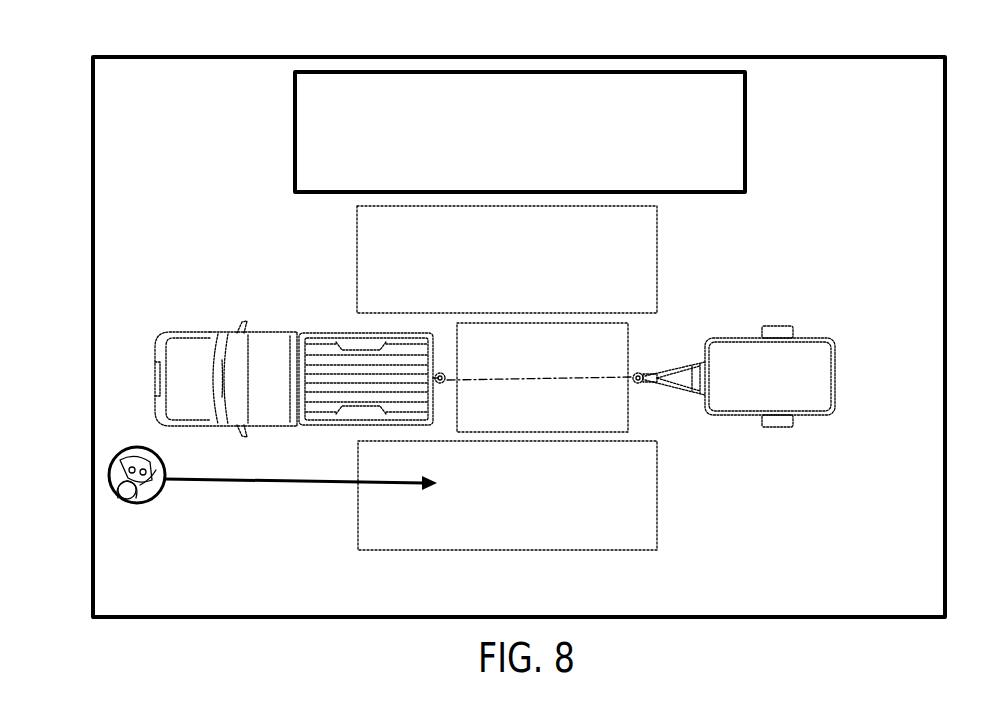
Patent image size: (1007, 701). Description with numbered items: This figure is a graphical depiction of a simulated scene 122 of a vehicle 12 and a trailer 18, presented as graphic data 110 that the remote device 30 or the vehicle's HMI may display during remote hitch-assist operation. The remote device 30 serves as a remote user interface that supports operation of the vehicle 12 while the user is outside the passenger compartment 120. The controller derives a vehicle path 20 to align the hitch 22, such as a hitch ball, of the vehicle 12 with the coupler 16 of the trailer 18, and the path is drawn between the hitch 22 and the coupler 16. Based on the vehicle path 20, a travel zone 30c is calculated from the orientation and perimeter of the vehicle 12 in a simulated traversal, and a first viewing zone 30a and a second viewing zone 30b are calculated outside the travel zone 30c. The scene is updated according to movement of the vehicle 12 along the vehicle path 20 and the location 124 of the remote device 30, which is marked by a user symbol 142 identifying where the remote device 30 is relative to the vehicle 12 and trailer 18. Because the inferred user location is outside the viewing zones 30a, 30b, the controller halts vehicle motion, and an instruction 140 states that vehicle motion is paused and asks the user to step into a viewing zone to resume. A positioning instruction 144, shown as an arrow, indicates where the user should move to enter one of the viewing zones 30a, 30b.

The graphic data 110 is at (512, 314).
The simulated scene 122 is at (236, 84).
The instruction 140 is at (294, 140).
The vehicle 12 is at (213, 290).
The passenger compartment 120 is at (218, 386).
The hitch 22 is at (441, 370).
The coupler 16 is at (638, 372).
The trailer 18 is at (750, 337).
The vehicle path 20 is at (628, 378).
The remote device 30 is at (166, 490).
The first viewing zone 30a is at (537, 524).
The second viewing zone 30b is at (540, 283).
The travel zone 30c is at (554, 408).
The location 124 is at (202, 489).
The user symbol 142 is at (158, 493).
The positioning instruction 144 is at (301, 497).